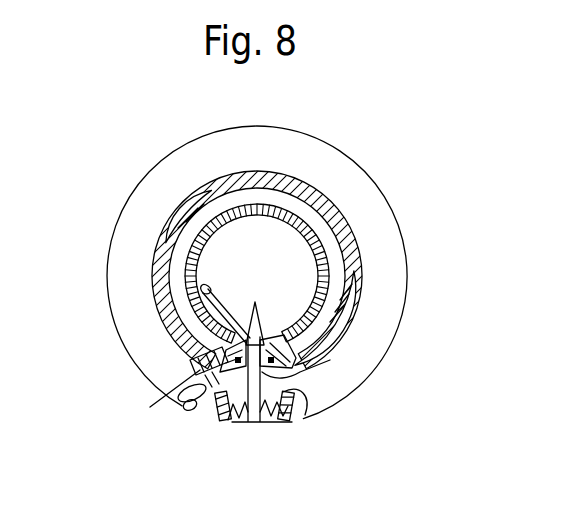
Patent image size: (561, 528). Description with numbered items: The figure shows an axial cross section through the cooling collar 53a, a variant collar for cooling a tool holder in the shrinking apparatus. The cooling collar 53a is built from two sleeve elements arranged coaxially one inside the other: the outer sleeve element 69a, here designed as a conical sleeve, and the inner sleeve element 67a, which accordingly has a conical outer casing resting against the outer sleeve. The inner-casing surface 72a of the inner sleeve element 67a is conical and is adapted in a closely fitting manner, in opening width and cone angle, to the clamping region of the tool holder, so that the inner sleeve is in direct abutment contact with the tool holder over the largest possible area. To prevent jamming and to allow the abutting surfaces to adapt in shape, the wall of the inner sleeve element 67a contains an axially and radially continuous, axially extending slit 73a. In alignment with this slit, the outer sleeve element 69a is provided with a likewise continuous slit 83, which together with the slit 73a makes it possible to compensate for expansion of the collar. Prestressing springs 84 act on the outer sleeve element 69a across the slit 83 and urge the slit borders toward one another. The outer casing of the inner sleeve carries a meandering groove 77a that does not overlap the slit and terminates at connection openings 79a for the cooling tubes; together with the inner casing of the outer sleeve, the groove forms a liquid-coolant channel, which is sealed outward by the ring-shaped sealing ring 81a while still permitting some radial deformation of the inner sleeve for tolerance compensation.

The cooling collar 53a is at (419, 231).
The inner sleeve element 67a is at (296, 220).
The outer sleeve element 69a is at (340, 310).
The inner-casing surface 72a is at (222, 298).
The slit 73a is at (302, 371).
The meandering groove 77a is at (172, 245).
The connection openings 79a is at (178, 404).
The sealing ring 81a is at (255, 337).
The slit 83 is at (307, 393).
The prestressing springs 84 is at (228, 423).